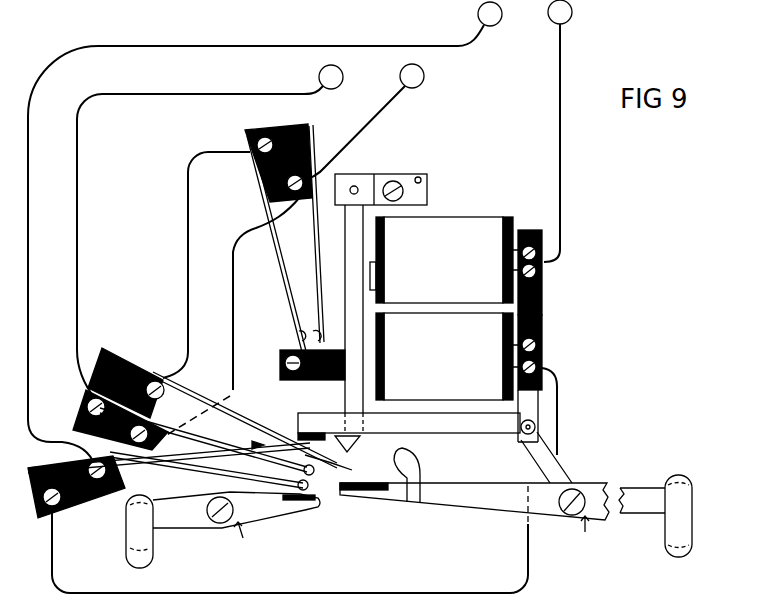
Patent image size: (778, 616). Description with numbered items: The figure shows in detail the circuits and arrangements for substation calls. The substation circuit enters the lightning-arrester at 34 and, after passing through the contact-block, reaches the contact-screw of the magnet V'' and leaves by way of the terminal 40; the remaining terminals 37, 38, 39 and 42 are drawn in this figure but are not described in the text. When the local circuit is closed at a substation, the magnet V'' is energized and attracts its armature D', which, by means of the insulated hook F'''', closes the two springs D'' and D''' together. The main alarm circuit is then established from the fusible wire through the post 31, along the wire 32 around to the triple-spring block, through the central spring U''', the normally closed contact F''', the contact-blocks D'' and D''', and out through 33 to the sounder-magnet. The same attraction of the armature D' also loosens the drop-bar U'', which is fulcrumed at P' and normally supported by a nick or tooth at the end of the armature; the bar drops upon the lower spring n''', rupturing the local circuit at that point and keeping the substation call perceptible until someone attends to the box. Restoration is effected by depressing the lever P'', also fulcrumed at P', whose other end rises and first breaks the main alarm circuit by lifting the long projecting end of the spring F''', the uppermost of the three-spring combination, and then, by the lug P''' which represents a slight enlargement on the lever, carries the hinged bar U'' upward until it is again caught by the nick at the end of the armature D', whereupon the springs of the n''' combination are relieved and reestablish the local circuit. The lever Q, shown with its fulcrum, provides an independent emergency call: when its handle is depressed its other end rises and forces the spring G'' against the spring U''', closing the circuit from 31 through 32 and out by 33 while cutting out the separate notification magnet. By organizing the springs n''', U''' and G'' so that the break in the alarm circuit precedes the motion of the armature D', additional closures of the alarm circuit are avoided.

The post 31 is at (222, 232).
The wire 32 is at (78, 213).
The wire terminal 33 is at (374, 122).
The lightning-arrester terminal 34 is at (276, 234).
The contact 37 is at (76, 496).
The contact 38 is at (96, 407).
The terminal 39 is at (544, 385).
The contact terminal 40 is at (545, 272).
The terminal 42 is at (572, 131).
The armature D' is at (349, 328).
The contact spring D'' is at (278, 238).
The contact spring D''' is at (308, 234).
The spring F''' is at (252, 421).
The insulated hook F'''' is at (312, 376).
The spring G'' is at (209, 471).
The lower spring n''' is at (169, 465).
The fulcrum P' is at (478, 504).
The restoring-arm P'' is at (655, 516).
The lug P''' is at (422, 475).
The lever Q is at (223, 530).
The drop-bar U'' is at (409, 426).
The central spring U''' is at (207, 441).
The magnet V'' is at (444, 308).